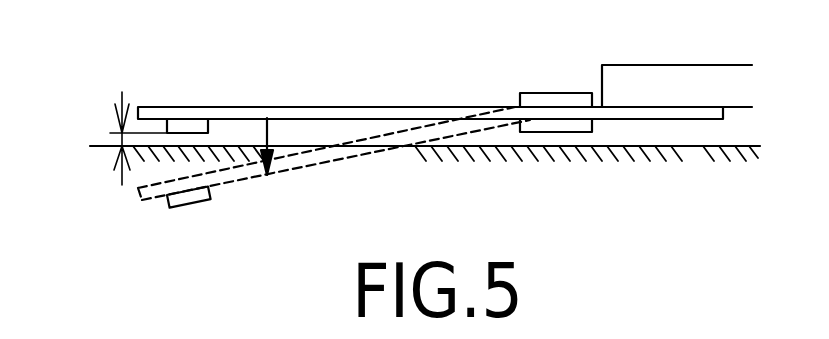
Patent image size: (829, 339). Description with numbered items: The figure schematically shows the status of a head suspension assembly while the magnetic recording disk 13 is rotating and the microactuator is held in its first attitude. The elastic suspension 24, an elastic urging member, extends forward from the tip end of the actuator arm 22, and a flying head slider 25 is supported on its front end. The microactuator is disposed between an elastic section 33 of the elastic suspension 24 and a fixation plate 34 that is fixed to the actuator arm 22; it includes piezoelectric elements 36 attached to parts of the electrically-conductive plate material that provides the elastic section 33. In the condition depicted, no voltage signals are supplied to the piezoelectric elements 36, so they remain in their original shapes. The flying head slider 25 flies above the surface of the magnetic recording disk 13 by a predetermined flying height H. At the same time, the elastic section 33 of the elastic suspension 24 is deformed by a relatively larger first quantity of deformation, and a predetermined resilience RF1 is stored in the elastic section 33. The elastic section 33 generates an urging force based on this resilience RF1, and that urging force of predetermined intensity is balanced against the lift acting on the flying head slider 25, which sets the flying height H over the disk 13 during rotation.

The magnetic recording disk 13 is at (102, 146).
The actuator arm 22 is at (697, 65).
The elastic suspension 24 is at (318, 107).
The flying head slider 25 is at (167, 123).
The elastic section 33 is at (507, 106).
The fixation plate 34 is at (687, 119).
The piezoelectric elements 36 is at (543, 93).
The flying height H is at (128, 157).
The resilience RF1 is at (296, 171).